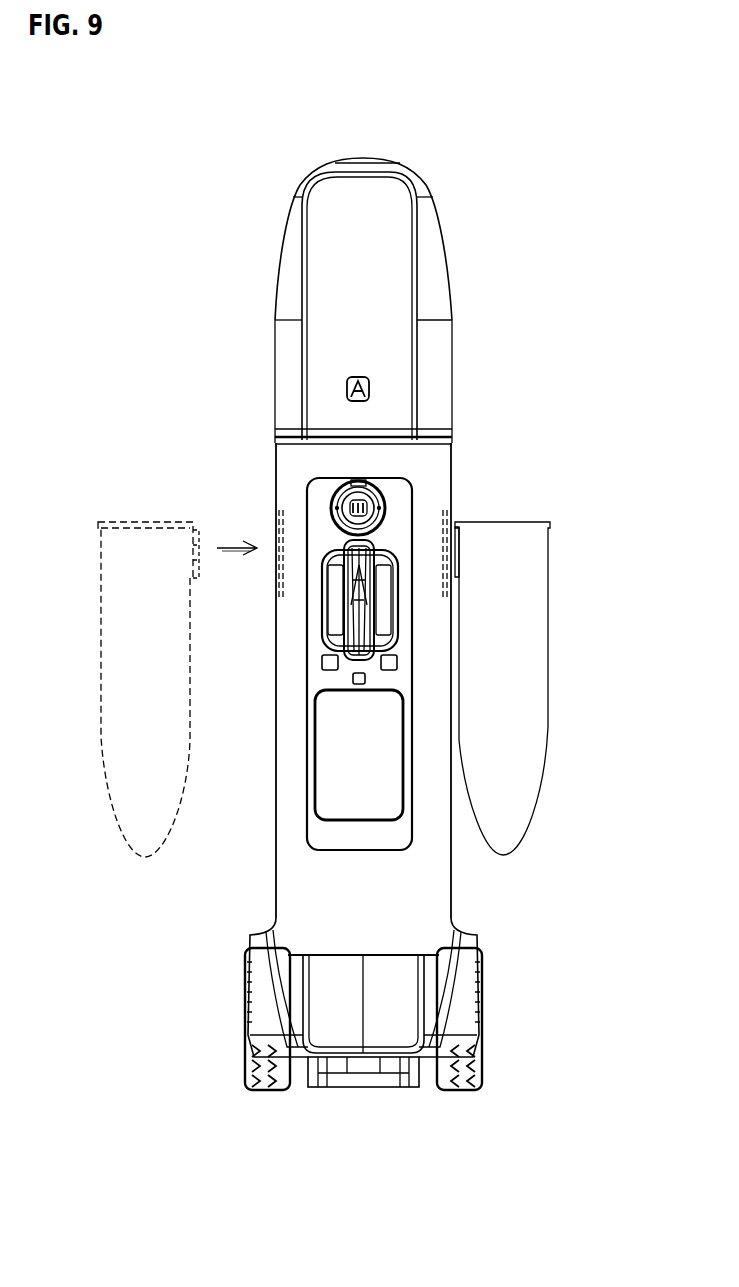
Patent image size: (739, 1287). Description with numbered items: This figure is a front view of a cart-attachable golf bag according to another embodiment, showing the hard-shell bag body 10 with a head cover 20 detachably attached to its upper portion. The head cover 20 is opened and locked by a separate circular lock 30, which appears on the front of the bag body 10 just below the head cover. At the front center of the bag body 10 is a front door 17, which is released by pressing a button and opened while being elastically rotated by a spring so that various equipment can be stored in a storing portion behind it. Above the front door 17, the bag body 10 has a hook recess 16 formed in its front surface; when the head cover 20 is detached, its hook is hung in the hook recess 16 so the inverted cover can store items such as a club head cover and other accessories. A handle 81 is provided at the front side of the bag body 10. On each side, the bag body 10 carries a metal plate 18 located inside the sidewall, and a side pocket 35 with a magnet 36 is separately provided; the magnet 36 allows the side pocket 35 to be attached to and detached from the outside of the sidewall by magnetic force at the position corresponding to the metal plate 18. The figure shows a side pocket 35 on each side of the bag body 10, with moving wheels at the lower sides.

The bag body 10 is at (253, 851).
The hook recess 16 is at (398, 662).
The front door 17 is at (358, 770).
The metal plate 18 is at (278, 515).
The head cover 20 is at (262, 265).
The circular lock 30 is at (336, 490).
The side pocket 35 is at (130, 603).
The magnet 36 is at (191, 541).
The handle 81 is at (344, 632).